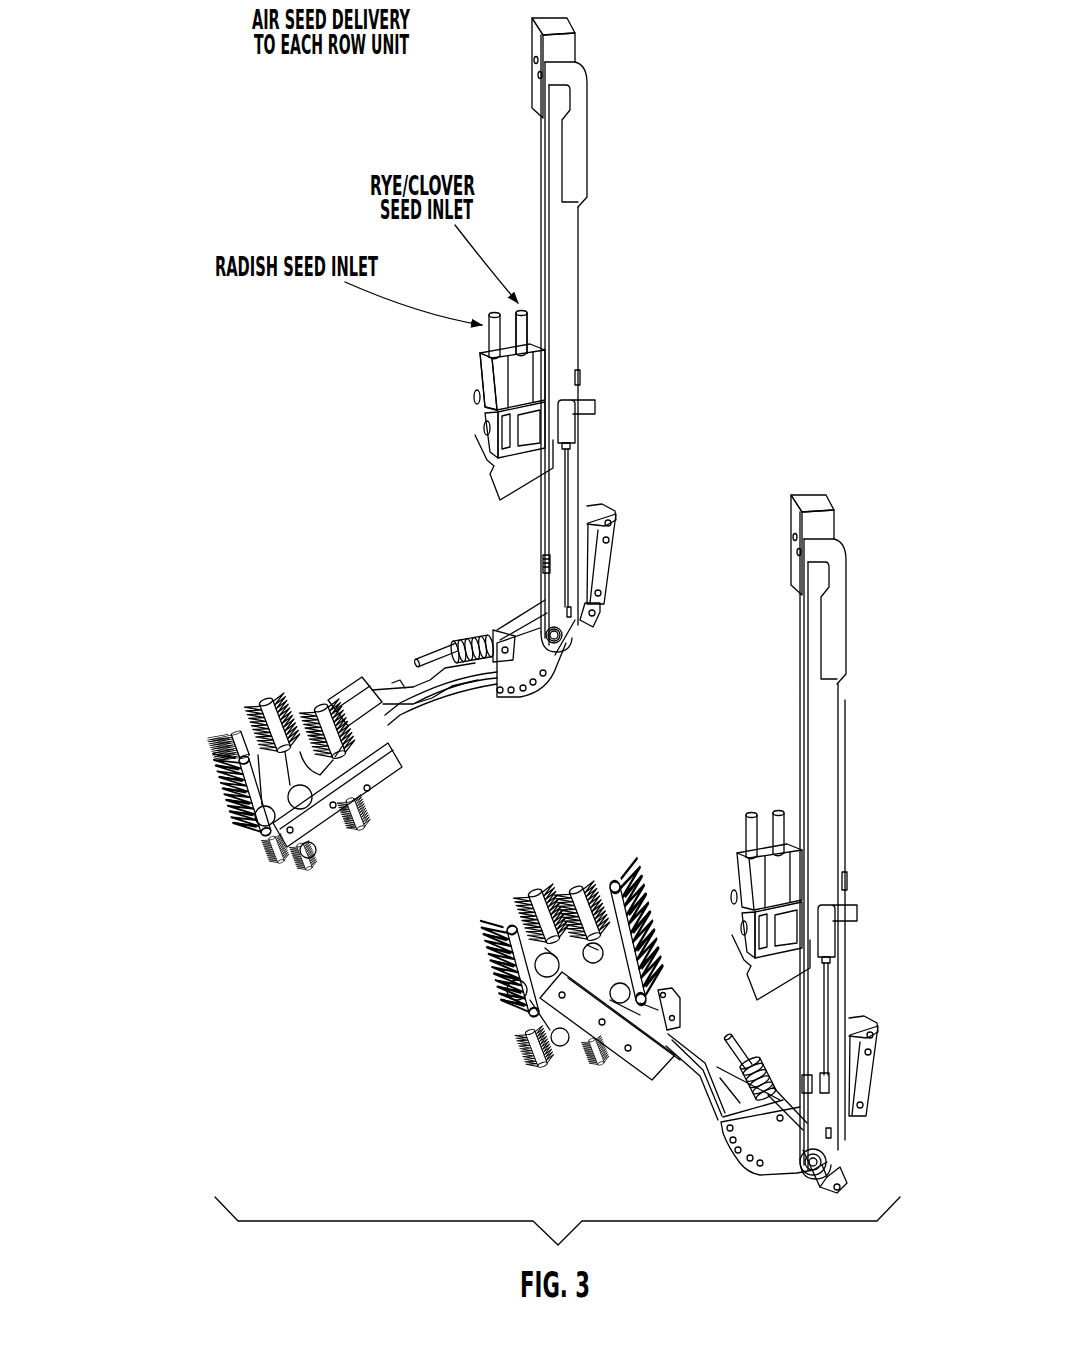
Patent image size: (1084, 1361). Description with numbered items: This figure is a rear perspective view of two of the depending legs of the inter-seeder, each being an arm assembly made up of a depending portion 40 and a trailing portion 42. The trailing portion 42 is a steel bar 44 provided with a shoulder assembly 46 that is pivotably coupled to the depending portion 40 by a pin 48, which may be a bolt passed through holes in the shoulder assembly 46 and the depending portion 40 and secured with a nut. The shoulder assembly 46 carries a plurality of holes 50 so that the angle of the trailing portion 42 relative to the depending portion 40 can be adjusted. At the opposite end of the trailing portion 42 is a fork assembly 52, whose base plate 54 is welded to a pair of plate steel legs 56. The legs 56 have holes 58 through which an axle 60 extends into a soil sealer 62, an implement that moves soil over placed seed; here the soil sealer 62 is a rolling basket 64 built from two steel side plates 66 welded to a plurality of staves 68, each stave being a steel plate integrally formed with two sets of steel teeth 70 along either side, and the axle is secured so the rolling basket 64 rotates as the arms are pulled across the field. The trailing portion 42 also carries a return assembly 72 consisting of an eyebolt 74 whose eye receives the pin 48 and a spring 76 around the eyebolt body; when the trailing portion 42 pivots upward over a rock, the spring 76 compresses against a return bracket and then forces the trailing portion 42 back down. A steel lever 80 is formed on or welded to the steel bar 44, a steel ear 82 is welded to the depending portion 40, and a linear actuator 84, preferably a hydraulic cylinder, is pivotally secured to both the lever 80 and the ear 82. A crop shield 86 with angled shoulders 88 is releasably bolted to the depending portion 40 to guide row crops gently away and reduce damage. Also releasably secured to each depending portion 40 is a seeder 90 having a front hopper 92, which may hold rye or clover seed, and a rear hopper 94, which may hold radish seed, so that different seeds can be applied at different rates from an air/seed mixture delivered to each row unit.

The depending portion 40 is at (614, 226).
The trailing portion 42 is at (439, 773).
The steel bar 44 is at (423, 722).
The shoulder assembly 46 is at (545, 712).
The pin 48 is at (563, 642).
The holes 50 is at (548, 680).
The fork assembly 52 is at (346, 680).
The base plate 54 is at (392, 683).
The legs 56 is at (312, 822).
The holes 58 is at (352, 856).
The axle 60 is at (262, 842).
The soil sealer 62 is at (205, 705).
The rolling basket 64 is at (200, 778).
The side plates 66 is at (231, 838).
The staves 68 is at (260, 702).
The teeth 70 is at (298, 705).
The return assembly 72 is at (450, 614).
The eyebolt 74 is at (461, 640).
The spring 76 is at (456, 632).
The lever 80 is at (599, 627).
The ear 82 is at (590, 507).
The linear actuator 84 is at (605, 563).
The crop shield 86 is at (600, 140).
The angled shoulders 88 is at (578, 178).
The seeder 90 is at (432, 355).
The front hopper 92 is at (552, 338).
The rear hopper 94 is at (478, 380).